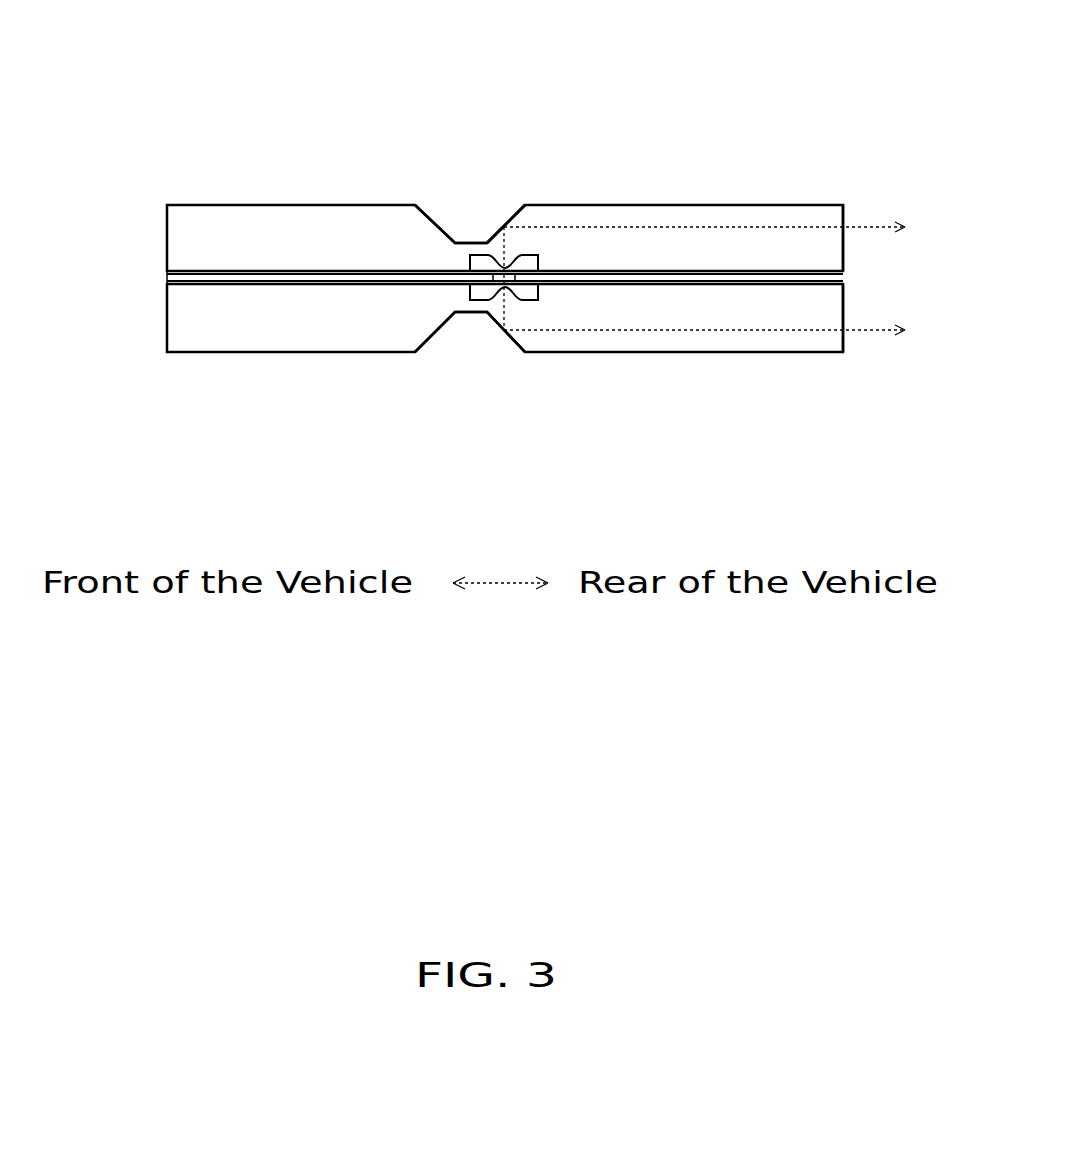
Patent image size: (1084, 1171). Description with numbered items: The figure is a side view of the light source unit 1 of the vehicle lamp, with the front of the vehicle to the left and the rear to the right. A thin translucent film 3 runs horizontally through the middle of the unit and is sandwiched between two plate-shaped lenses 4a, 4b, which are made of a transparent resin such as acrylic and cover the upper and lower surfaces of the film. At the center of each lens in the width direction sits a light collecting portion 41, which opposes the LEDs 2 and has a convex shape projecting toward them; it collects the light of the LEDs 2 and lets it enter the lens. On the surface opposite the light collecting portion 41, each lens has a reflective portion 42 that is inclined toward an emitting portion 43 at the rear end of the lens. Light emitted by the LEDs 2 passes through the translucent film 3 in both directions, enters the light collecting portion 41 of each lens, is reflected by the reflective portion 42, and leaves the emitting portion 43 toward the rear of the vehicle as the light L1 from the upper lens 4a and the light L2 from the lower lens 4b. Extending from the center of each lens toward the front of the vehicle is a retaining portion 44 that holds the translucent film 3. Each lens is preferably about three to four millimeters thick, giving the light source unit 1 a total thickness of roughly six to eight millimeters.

The light source unit 1 is at (775, 95).
The LEDs 2 is at (529, 331).
The translucent film 3 is at (167, 274).
The lens 4a is at (237, 203).
The lens 4b is at (235, 352).
The light collecting portion 41 is at (527, 263).
The reflective portion 42 is at (503, 228).
The emitting portion 43 is at (843, 210).
The retaining portion 44 is at (352, 225).
The light L1 is at (727, 228).
The light L2 is at (727, 331).